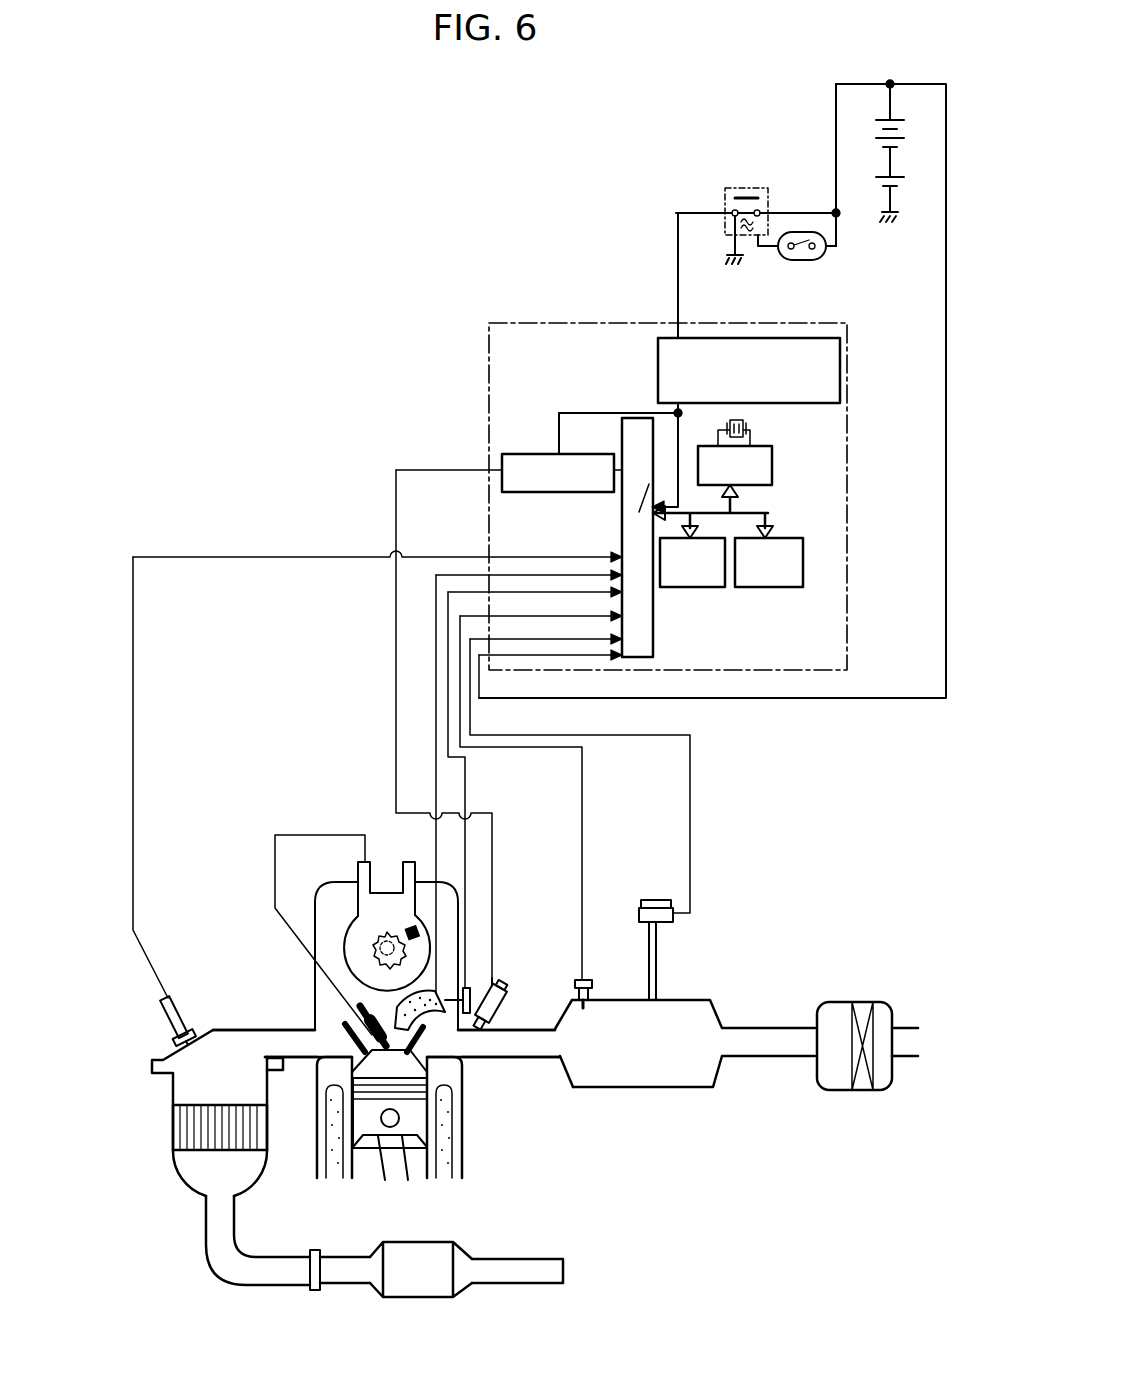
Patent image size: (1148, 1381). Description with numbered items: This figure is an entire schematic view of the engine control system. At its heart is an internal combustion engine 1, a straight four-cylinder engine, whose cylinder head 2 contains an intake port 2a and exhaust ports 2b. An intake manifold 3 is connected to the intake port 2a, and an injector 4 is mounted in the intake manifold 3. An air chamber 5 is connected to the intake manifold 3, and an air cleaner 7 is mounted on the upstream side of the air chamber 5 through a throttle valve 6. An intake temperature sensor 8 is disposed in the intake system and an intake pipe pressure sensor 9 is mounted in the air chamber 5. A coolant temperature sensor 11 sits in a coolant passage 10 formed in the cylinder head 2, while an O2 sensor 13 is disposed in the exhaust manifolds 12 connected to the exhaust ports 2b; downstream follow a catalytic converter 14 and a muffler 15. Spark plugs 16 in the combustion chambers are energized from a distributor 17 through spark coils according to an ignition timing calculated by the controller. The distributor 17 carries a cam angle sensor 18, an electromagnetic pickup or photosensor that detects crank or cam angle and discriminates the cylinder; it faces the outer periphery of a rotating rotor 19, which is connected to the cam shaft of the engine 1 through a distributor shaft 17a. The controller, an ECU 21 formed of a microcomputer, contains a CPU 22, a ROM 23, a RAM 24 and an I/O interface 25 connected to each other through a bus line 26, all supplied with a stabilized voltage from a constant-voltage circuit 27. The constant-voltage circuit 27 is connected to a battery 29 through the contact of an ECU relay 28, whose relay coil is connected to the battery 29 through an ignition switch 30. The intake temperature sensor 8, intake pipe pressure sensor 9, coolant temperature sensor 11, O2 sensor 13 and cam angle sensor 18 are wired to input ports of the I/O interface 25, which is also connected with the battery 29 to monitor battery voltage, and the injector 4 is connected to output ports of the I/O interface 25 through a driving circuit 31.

The internal combustion engine 1 is at (462, 1135).
The cylinder head 2 is at (462, 1060).
The intake port 2a is at (442, 1050).
The exhaust ports 2b is at (323, 1045).
The intake manifold 3 is at (530, 1029).
The injector 4 is at (505, 997).
The air chamber 5 is at (692, 1088).
The throttle valve 6 is at (770, 1042).
The air cleaner 7 is at (862, 1002).
The intake temperature sensor 8 is at (598, 996).
The intake pipe pressure sensor 9 is at (656, 900).
The coolant passage 10 is at (405, 998).
The coolant temperature sensor 11 is at (481, 983).
The exhaust manifolds 12 is at (218, 1037).
The O2 sensor 13 is at (178, 1000).
The catalytic converter 14 is at (173, 1128).
The muffler 15 is at (428, 1297).
The spark plugs 16 is at (358, 1009).
The distributor 17 is at (355, 915).
The distributor shaft 17a is at (380, 948).
The cam angle sensor 18 is at (410, 925).
The rotating rotor 19 is at (420, 930).
The controller (ECU) 21 is at (520, 325).
The CPU 22 is at (772, 466).
The ROM 23 is at (700, 587).
The RAM 24 is at (770, 587).
The I/O interface 25 is at (653, 650).
The bus line 26 is at (770, 520).
The constant-voltage circuit 27 is at (786, 338).
The ECU relay 28 is at (733, 188).
The battery 29 is at (875, 145).
The ignition switch 30 is at (815, 258).
The driving circuit 31 is at (518, 454).